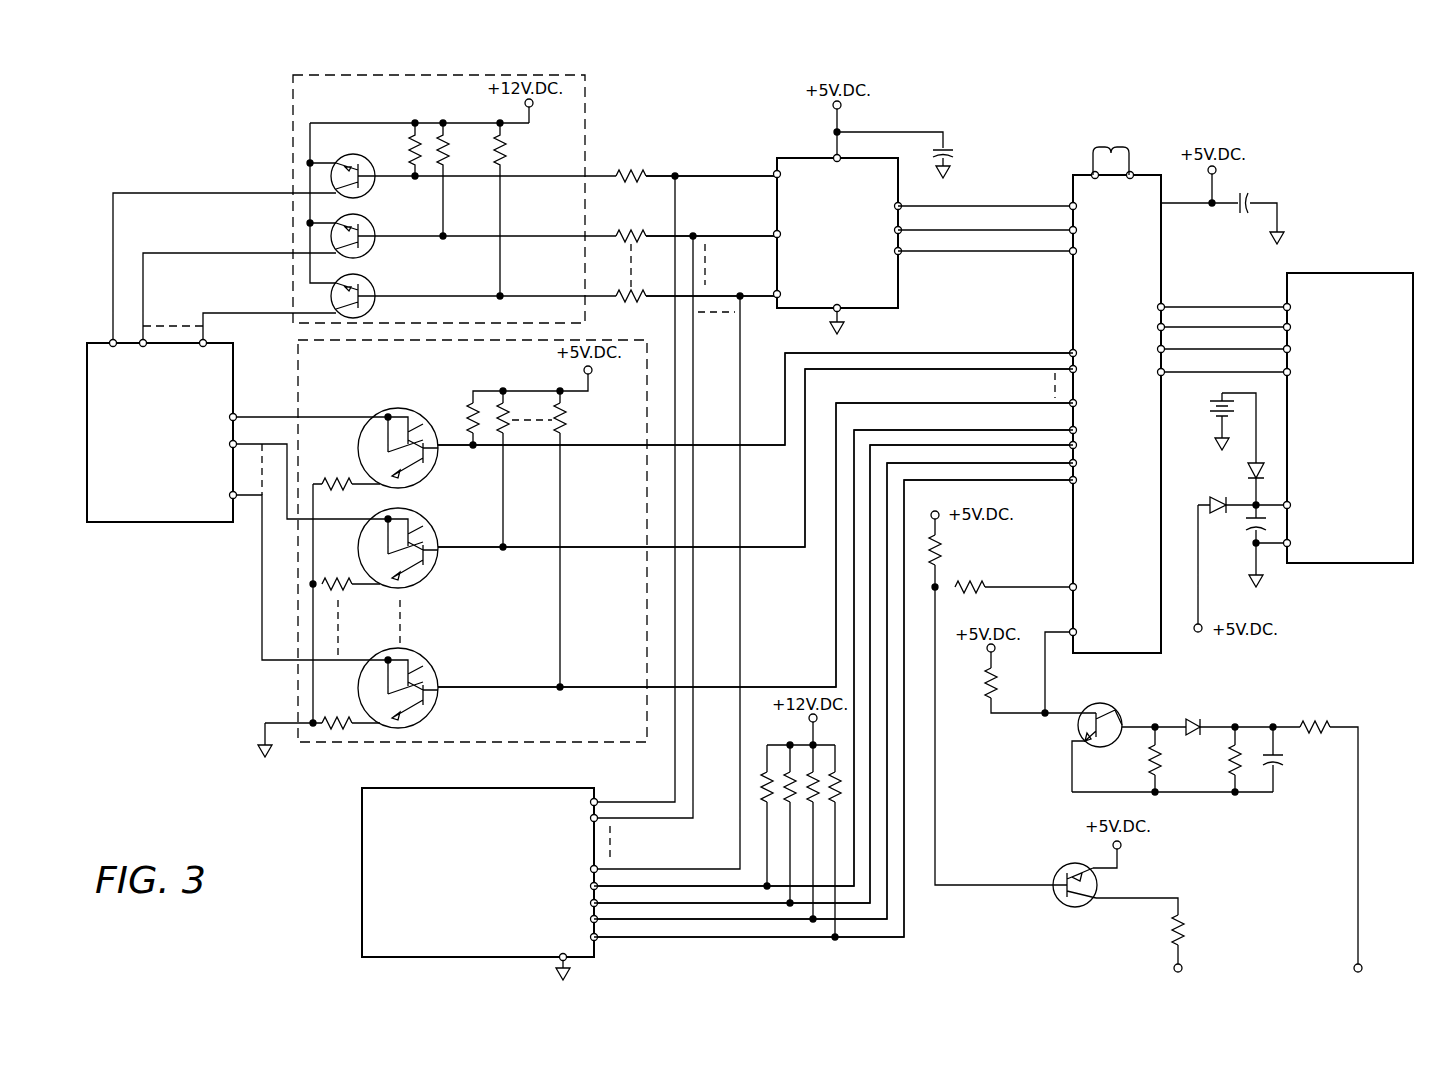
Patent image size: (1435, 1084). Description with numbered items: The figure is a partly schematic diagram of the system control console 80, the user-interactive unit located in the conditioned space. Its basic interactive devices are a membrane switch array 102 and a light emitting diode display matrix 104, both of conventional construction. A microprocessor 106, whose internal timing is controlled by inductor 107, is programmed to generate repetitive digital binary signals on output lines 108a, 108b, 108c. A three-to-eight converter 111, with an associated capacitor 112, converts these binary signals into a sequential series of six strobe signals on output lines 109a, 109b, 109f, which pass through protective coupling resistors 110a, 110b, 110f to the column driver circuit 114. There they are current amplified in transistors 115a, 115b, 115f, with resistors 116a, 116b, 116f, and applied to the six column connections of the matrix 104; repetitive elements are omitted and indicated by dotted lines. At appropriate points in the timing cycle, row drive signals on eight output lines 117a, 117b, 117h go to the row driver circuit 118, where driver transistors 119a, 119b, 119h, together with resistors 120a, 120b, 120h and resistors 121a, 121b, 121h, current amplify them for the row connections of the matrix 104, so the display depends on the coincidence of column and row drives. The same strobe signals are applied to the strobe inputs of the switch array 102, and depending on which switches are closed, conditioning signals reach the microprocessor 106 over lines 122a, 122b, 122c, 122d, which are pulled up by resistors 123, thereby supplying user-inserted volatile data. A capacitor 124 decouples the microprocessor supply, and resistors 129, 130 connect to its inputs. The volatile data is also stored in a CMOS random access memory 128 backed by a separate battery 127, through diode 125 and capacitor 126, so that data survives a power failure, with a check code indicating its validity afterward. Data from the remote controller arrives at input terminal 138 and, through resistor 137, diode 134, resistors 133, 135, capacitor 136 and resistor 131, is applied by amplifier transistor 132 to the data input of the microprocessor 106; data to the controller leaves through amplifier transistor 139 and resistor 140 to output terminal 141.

The system control console 80 is at (183, 690).
The membrane switch array 102 is at (362, 808).
The light emitting diode display matrix 104 is at (150, 523).
The microprocessor 106 is at (1072, 175).
The inductor 107 is at (1110, 146).
The output line 108a is at (1012, 204).
The output line 108b is at (1012, 228).
The output line 108c is at (1012, 250).
The output line 109a is at (742, 174).
The output line 109b is at (742, 222).
The output line 109f is at (718, 292).
The protective coupling resistor 110a is at (628, 172).
The protective coupling resistor 110b is at (640, 216).
The protective coupling resistor 110f is at (640, 302).
The three-to-eight converter 111 is at (782, 157).
The capacitor 112 is at (948, 146).
The column driver circuit 114 is at (590, 100).
The transistor 115a is at (373, 154).
The transistor 115b is at (376, 226).
The transistor 115f is at (376, 284).
The resistor 116a is at (409, 122).
The resistor 116b is at (452, 135).
The resistor 116f is at (509, 147).
The output line 117a is at (932, 353).
The output line 117b is at (915, 372).
The output line 117h is at (994, 398).
The row driver circuit 118 is at (422, 745).
The driver transistor 119a is at (434, 466).
The driver transistor 119b is at (432, 531).
The driver transistor 119h is at (430, 661).
The resistor 120a is at (470, 404).
The resistor 120b is at (525, 398).
The resistor 120h is at (567, 412).
The resistor 121a is at (336, 477).
The resistor 121b is at (341, 575).
The resistor 121h is at (339, 712).
The line 122a is at (634, 879).
The line 122b is at (682, 876).
The line 122c is at (701, 924).
The line 122d is at (769, 936).
The resistors 123 is at (832, 768).
The capacitor 124 is at (1247, 201).
The diode 125 is at (1248, 470).
The capacitor 126 is at (1250, 538).
The battery 127 is at (1212, 403).
The CMOS random access memory 128 is at (1345, 272).
The resistor 129 is at (939, 554).
The resistor 130 is at (984, 586).
The resistor 131 is at (986, 698).
The amplifier transistor 132 is at (1096, 708).
The resistor 133 is at (1152, 770).
The diode 134 is at (1193, 718).
The resistor 135 is at (1232, 770).
The capacitor 136 is at (1280, 762).
The resistor 137 is at (1308, 723).
The input terminal 138 is at (1354, 966).
The amplifier transistor 139 is at (1064, 860).
The resistor 140 is at (1184, 914).
The output terminal 141 is at (1185, 966).